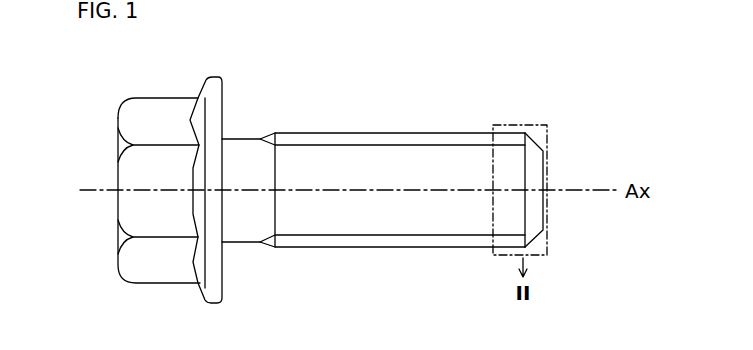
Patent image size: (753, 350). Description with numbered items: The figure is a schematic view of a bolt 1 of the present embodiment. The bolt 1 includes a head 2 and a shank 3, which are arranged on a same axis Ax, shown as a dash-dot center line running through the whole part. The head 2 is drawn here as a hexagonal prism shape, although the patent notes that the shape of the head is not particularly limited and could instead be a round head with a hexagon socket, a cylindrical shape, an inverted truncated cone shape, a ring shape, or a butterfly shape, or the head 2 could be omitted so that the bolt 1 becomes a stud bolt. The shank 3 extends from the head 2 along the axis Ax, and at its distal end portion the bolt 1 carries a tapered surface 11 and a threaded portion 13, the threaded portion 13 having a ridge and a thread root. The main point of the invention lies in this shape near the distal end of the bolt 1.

The bolt 1 is at (373, 74).
The head 2 is at (135, 103).
The shank 3 is at (385, 155).
The tapered surface 11 is at (535, 158).
The threaded portion 13 is at (483, 139).